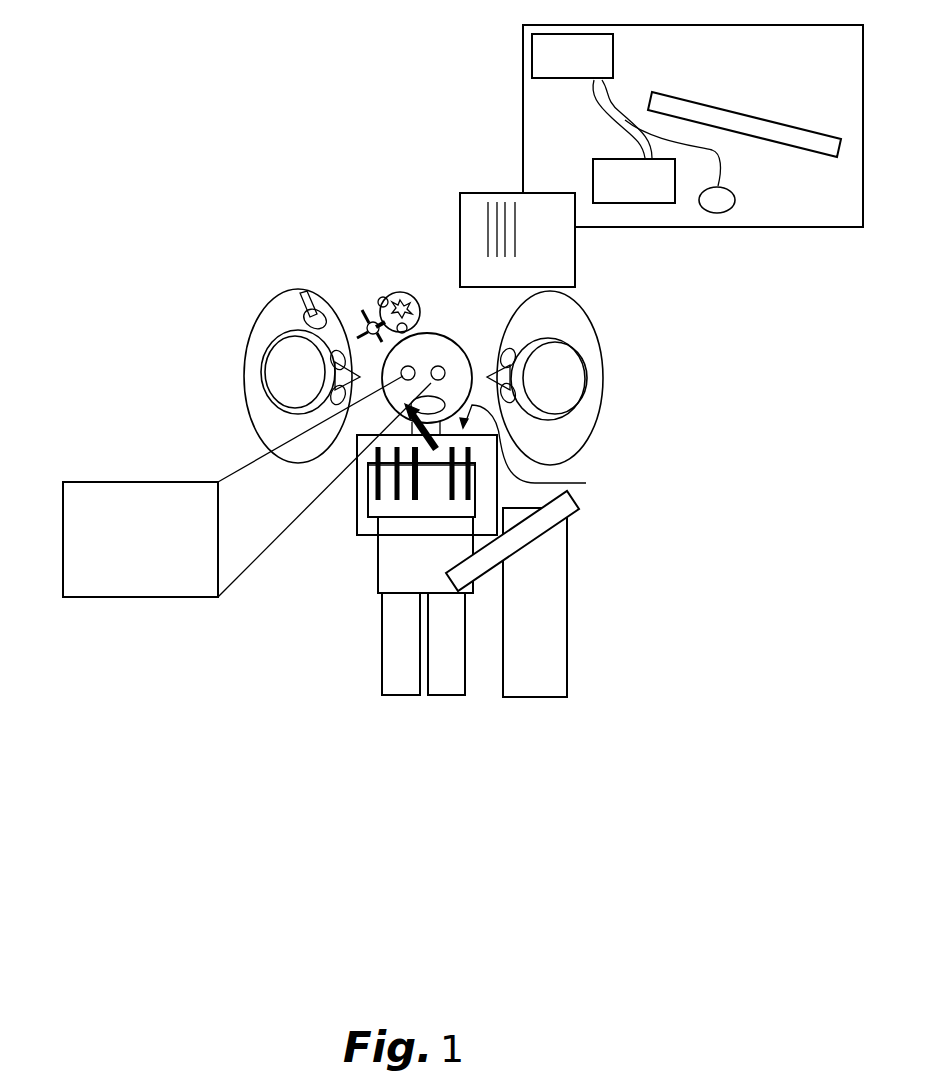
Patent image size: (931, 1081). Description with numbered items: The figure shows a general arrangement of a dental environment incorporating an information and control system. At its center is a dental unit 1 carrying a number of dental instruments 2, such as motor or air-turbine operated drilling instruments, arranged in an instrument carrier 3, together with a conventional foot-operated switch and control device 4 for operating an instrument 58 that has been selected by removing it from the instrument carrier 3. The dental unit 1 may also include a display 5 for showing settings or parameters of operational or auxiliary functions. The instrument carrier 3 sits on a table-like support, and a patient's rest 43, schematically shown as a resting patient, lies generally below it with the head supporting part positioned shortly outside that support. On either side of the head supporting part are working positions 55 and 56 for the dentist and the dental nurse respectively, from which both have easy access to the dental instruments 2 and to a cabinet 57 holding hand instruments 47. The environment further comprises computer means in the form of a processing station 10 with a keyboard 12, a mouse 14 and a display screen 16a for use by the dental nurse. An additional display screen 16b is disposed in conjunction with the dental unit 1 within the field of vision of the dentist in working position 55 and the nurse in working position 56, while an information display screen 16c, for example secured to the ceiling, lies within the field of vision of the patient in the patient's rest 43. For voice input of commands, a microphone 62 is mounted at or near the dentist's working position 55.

The dental unit 1 is at (556, 602).
The dental instruments 2 is at (365, 515).
The instrument carrier 3 is at (421, 482).
The foot-operated switch and control device 4 is at (395, 294).
The display 5 is at (553, 452).
The processing station 10 is at (589, 47).
The keyboard 12 is at (626, 167).
The mouse 14 is at (749, 205).
The display screen 16a is at (744, 117).
The additional display screen 16b is at (541, 541).
The information display screen 16c is at (121, 552).
The patient's rest 43 is at (425, 555).
The hand instruments 47 is at (594, 260).
The working position for a dentist 55 is at (280, 376).
The working position for a dental nurse 56 is at (562, 378).
The cabinet 57 is at (503, 227).
The selected instrument 58 is at (370, 512).
The microphone 62 is at (298, 290).